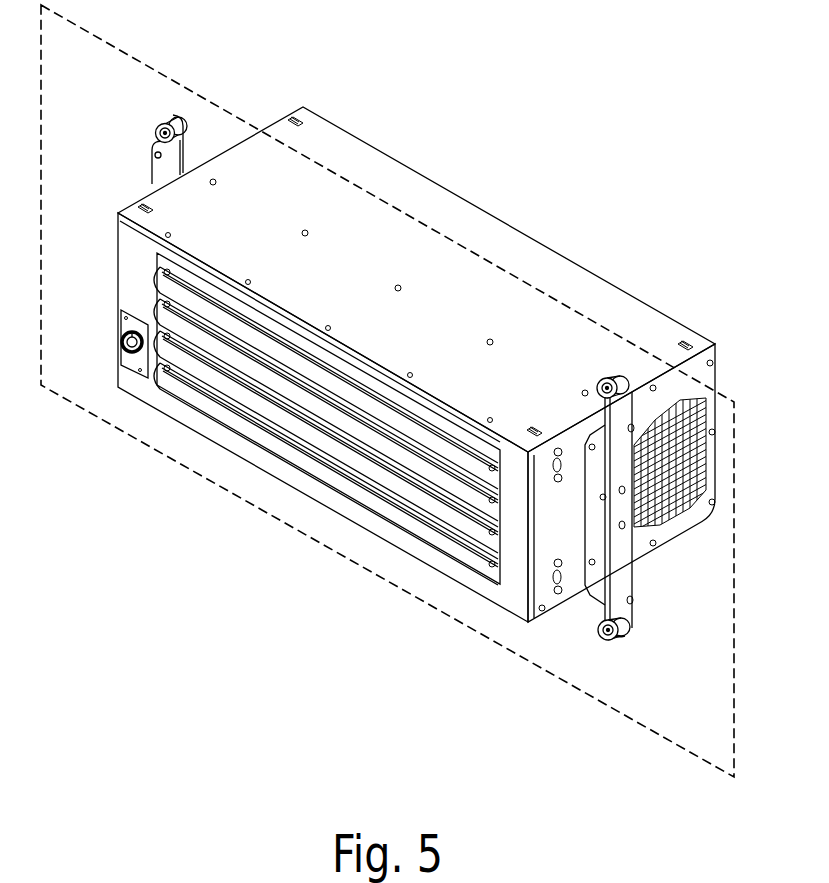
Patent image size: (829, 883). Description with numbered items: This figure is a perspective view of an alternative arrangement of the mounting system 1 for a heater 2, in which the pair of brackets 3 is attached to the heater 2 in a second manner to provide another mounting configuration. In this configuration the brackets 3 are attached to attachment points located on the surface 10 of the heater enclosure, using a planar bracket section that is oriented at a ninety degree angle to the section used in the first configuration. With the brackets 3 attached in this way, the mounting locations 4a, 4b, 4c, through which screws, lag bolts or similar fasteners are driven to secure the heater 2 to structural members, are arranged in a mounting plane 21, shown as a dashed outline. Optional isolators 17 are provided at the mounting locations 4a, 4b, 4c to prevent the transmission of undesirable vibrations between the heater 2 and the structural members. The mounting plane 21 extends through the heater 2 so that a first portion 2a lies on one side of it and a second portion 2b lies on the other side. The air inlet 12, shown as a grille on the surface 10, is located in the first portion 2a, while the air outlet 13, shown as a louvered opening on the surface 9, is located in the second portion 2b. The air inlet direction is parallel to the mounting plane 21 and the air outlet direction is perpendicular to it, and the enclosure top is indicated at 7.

The mounting system 1 is at (592, 166).
The heater 2 is at (285, 563).
The first portion 2a is at (567, 260).
The second portion 2b is at (443, 318).
The bracket 3 is at (160, 170).
The mounting location 4a is at (605, 386).
The mounting location 4b is at (602, 633).
The mounting location 4c is at (163, 135).
The top wall 7 is at (209, 225).
The surface 9 is at (138, 250).
The surface 10 is at (663, 530).
The air inlet 12 is at (683, 478).
The air outlet 13 is at (253, 418).
The isolator 17 is at (162, 122).
The mounting plane 21 is at (137, 60).